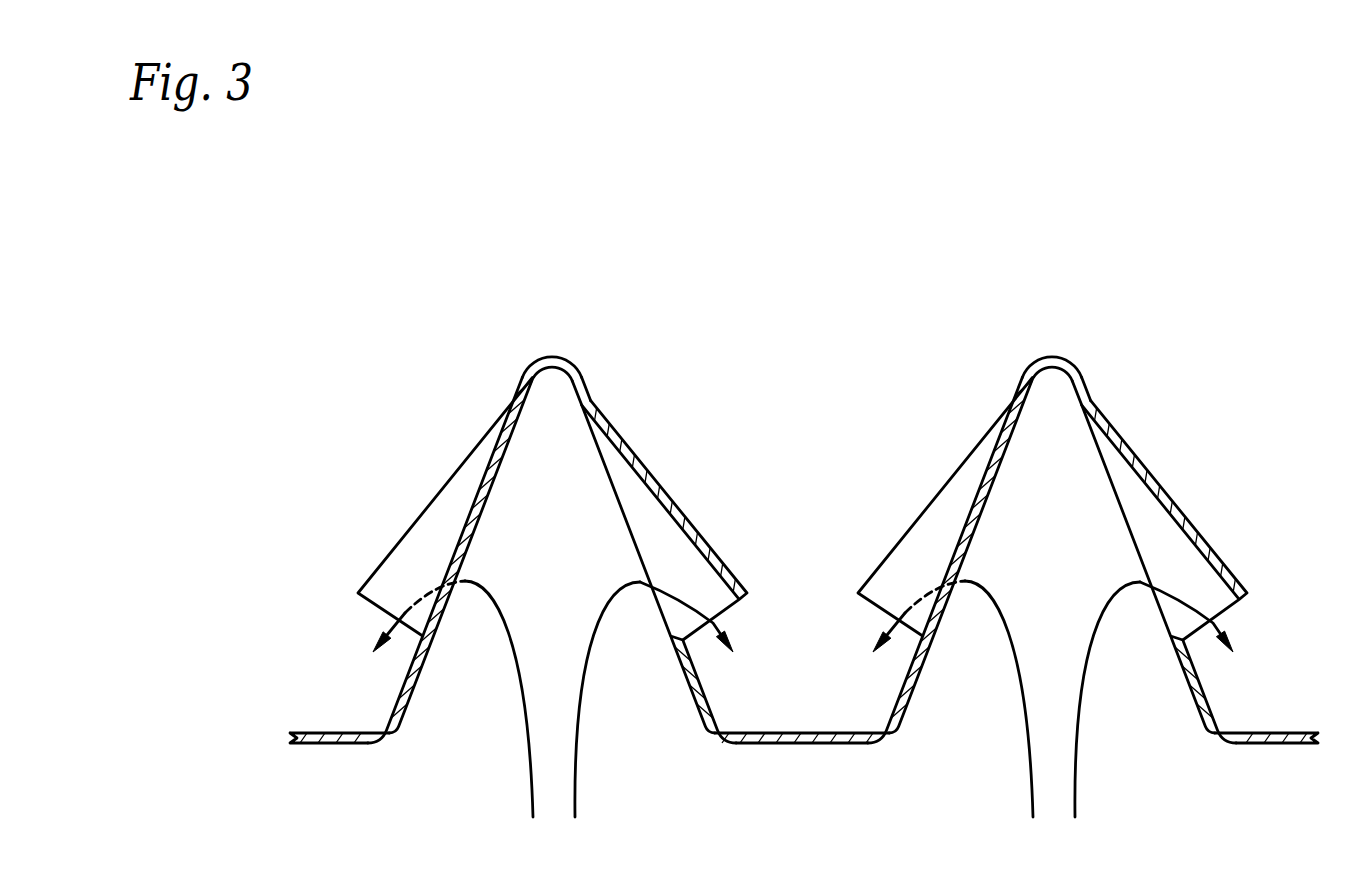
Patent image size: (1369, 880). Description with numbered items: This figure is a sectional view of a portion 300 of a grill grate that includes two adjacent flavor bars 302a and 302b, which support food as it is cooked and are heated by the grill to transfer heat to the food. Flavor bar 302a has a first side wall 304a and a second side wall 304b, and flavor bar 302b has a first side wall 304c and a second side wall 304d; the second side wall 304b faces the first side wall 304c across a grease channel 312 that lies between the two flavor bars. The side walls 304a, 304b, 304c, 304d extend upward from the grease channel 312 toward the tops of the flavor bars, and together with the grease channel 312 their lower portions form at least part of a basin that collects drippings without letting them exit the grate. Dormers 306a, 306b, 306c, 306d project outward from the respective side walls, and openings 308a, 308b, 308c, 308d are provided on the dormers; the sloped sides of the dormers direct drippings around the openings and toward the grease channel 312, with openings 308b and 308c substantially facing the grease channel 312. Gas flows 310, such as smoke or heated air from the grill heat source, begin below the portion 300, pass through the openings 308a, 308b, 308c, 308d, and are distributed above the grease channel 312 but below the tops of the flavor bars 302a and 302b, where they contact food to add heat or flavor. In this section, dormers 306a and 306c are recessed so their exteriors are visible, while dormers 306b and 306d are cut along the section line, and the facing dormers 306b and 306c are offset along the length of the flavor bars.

The portion of grill grate 300 is at (1238, 184).
The flavor bar 302a is at (563, 358).
The flavor bar 302b is at (1101, 339).
The first side wall 304a is at (488, 466).
The second side wall 304b is at (588, 392).
The first side wall 304c is at (938, 560).
The second side wall 304d is at (1154, 548).
The dormer 306a is at (405, 535).
The dormer 306b is at (670, 493).
The dormer 306c is at (901, 526).
The dormer 306d is at (1179, 520).
The opening 308a is at (378, 603).
The opening 308b is at (728, 608).
The opening 308c is at (919, 616).
The opening 308d is at (1233, 617).
The gas flows 310 is at (573, 803).
The grease channel 312 is at (840, 732).